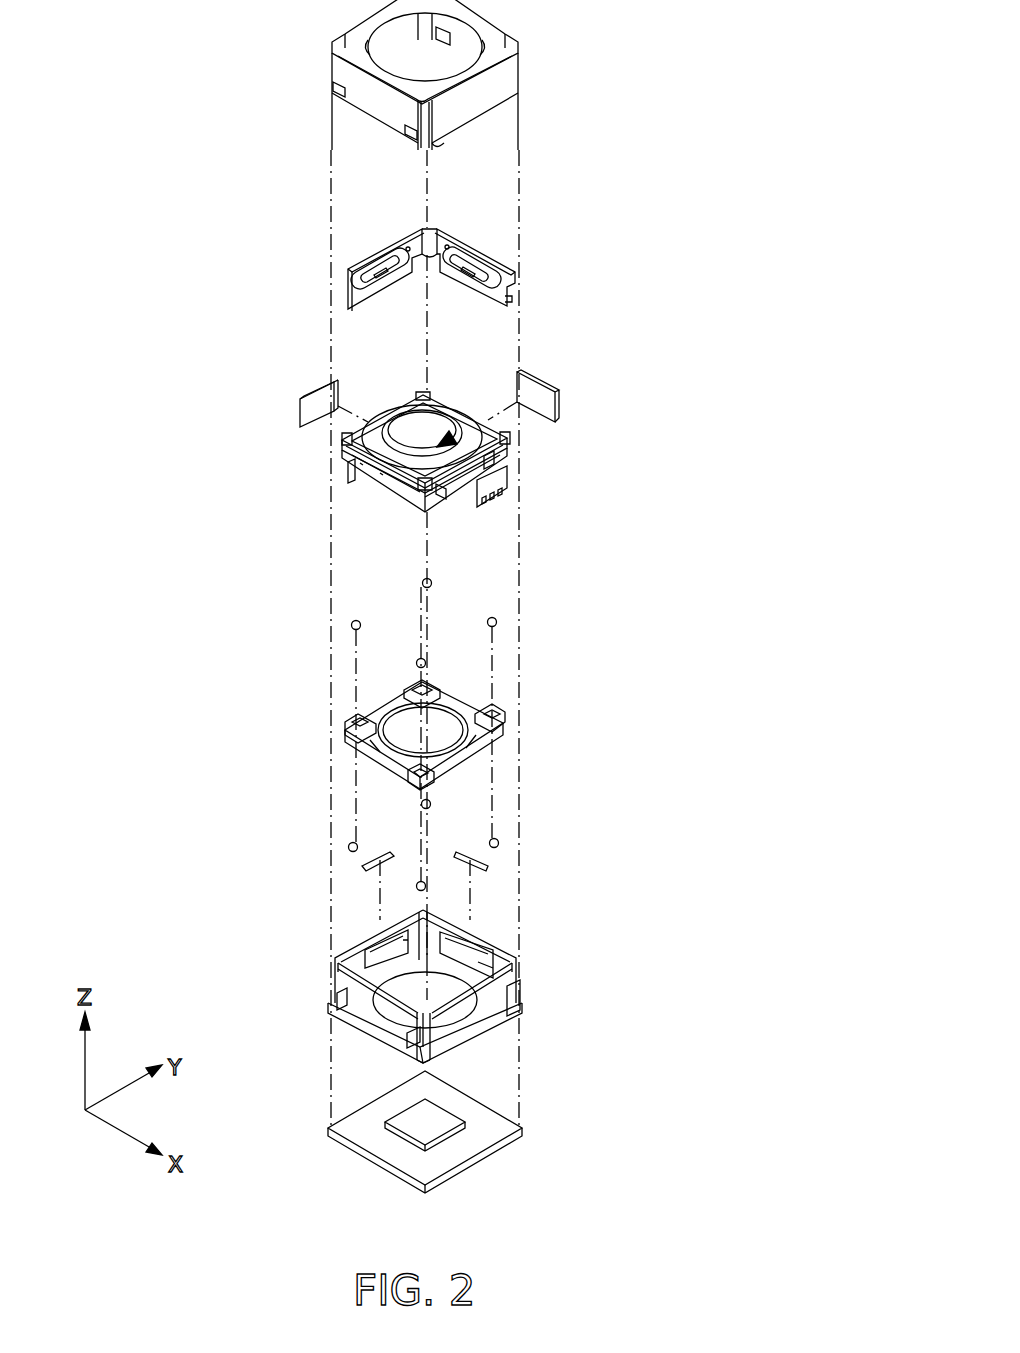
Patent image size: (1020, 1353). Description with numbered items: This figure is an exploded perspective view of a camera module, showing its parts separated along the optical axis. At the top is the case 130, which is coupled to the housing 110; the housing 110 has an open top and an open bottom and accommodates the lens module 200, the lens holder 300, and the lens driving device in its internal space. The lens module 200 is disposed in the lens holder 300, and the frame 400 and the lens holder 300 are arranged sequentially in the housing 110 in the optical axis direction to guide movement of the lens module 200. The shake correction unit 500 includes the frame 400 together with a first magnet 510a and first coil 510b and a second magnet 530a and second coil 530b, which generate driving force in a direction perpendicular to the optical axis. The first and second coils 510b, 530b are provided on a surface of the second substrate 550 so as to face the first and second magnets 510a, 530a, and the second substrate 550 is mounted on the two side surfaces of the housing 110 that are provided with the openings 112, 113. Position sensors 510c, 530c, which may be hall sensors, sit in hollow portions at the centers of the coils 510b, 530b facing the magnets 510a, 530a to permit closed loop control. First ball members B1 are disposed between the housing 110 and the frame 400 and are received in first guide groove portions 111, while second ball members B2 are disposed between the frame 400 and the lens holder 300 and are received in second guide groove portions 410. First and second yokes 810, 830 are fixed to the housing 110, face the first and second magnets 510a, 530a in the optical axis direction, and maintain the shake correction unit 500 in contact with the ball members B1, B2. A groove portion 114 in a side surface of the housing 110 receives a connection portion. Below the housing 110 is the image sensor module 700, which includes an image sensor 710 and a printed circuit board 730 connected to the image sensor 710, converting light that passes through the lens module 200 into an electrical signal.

The case 130 is at (494, 38).
The shake correction unit 500 is at (260, 328).
The second substrate 550 is at (410, 236).
The first magnet 510a is at (300, 412).
The first coil 510b is at (352, 289).
The position sensor 510c is at (382, 280).
The second magnet 530a is at (548, 413).
The second coil 530b is at (500, 271).
The position sensor 530c is at (474, 280).
The lens module 200 is at (503, 462).
The lens holder 300 is at (503, 489).
The frame 400 is at (462, 735).
The second guide groove portions 410 is at (500, 721).
The first ball members B1 is at (348, 847).
The second ball members B2 is at (351, 625).
The first yoke 810 is at (380, 856).
The second yoke 830 is at (463, 855).
The housing 110 is at (438, 982).
The first guide groove portions 111 is at (440, 956).
The opening 112 is at (392, 948).
The opening 113 is at (484, 961).
The groove portion 114 is at (518, 1018).
The image sensor module 700 is at (497, 1132).
The image sensor 710 is at (432, 1118).
The printed circuit board 730 is at (470, 1148).